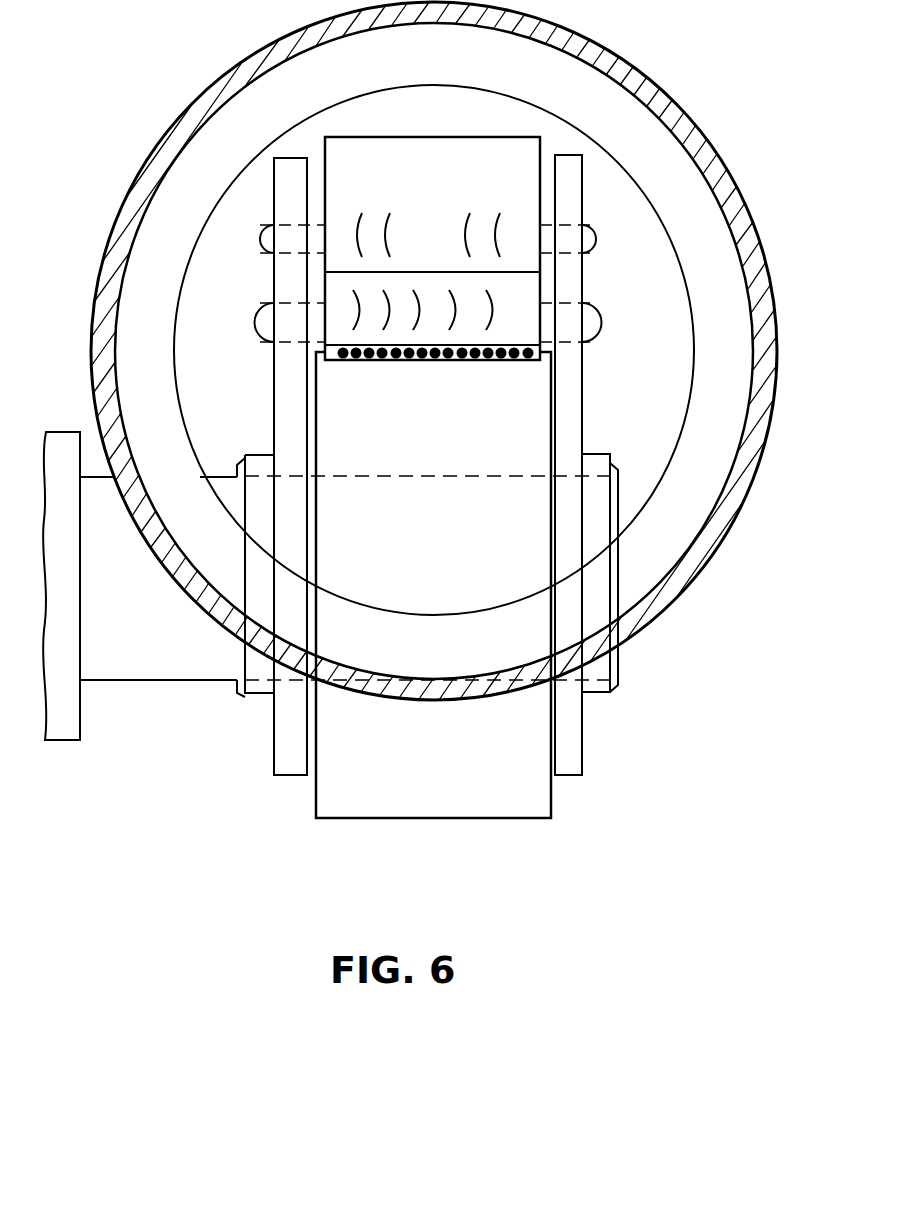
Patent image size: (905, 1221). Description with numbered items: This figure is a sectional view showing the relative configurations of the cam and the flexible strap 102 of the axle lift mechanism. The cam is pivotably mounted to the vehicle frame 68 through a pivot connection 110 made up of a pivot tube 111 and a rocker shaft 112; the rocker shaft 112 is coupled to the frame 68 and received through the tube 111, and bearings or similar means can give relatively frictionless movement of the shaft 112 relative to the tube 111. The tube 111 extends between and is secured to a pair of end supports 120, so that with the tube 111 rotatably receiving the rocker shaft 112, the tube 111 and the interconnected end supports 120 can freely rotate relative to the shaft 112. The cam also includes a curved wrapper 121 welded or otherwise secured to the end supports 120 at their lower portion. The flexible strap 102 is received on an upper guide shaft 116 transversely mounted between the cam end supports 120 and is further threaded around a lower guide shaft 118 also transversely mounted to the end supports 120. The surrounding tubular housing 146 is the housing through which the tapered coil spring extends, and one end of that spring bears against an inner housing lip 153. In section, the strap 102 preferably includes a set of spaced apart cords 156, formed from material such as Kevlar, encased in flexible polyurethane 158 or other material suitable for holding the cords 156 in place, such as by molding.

The vehicle frame 68 is at (63, 430).
The flexible strap 102 is at (444, 182).
The pivot connection 110 is at (243, 702).
The pivot tube 111 is at (488, 474).
The rocker shaft 112 is at (140, 681).
The upper guide shaft 116 is at (320, 228).
The lower guide shaft 118 is at (310, 298).
The end supports 120 is at (582, 196).
The curved wrapper 121 is at (437, 431).
The tubular housing 146 is at (675, 98).
The inner housing lip 153 is at (163, 300).
The cords 156 is at (403, 365).
The flexible polyurethane 158 is at (481, 363).